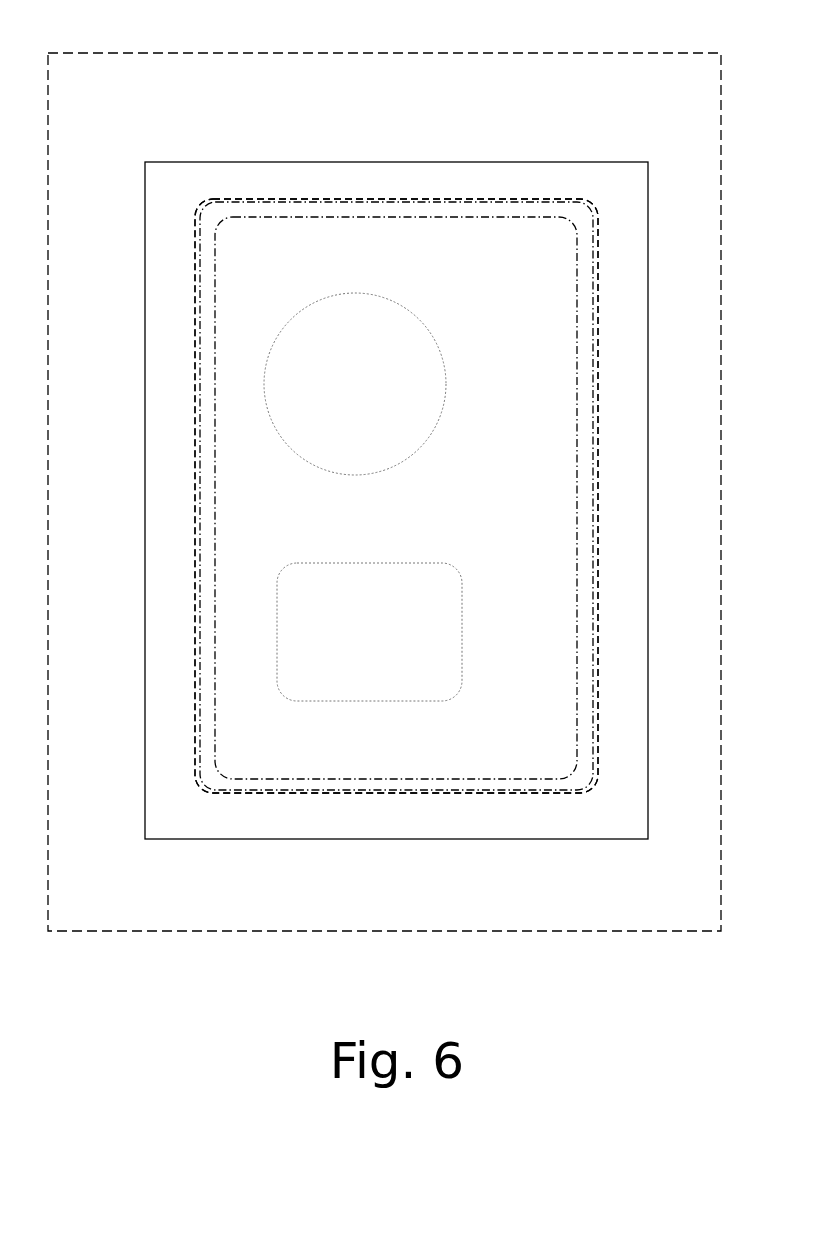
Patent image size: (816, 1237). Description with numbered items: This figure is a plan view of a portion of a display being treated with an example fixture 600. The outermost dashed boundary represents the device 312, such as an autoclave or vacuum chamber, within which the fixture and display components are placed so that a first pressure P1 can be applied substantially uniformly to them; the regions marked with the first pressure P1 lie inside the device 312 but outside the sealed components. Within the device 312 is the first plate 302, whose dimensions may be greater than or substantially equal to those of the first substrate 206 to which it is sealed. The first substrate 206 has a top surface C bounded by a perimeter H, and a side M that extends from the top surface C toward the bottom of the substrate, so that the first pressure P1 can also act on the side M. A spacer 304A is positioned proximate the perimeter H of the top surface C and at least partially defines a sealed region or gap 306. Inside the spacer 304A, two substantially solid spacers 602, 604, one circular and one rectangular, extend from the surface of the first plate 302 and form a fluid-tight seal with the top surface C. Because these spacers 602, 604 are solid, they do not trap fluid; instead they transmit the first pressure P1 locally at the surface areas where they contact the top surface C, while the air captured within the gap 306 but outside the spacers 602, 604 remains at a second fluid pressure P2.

The device 312 is at (384, 469).
The first plate 302 is at (396, 477).
The fixture 600 is at (536, 121).
The first substrate 206 is at (438, 540).
The side M is at (401, 496).
The perimeter H is at (446, 496).
The spacer 304A is at (396, 498).
The spacer 602 is at (395, 384).
The spacer 604 is at (409, 632).
The gap 306 is at (182, 580).
The first pressure P1 is at (388, 496).
The second fluid pressure P2 is at (506, 492).
The top surface C is at (419, 524).